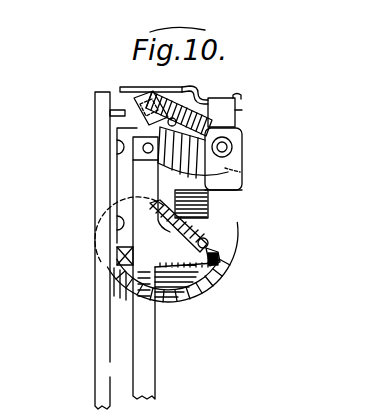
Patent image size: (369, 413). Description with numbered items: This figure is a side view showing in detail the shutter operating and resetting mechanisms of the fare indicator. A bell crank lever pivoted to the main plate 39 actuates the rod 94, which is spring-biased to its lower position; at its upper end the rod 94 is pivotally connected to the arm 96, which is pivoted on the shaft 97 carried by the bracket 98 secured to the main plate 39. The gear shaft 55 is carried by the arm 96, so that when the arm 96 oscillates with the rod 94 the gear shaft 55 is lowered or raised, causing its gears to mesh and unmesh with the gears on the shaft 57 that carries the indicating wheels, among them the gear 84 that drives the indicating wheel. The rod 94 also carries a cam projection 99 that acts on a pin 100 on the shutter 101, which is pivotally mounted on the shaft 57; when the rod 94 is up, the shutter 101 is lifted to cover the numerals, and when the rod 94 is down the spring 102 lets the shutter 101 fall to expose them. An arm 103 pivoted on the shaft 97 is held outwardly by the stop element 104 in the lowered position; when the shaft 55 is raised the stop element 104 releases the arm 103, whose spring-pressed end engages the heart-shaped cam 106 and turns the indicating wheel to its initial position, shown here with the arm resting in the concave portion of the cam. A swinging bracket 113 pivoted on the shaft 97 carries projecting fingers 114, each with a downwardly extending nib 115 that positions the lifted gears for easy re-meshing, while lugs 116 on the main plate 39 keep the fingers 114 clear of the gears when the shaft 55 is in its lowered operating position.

The main plate 39 is at (98, 147).
The gear shaft 55 is at (173, 121).
The shaft 57 is at (140, 238).
The gear 84 is at (202, 292).
The rod 94 is at (145, 365).
The arm 96 is at (241, 123).
The shaft 97 is at (243, 143).
The bracket 98 is at (242, 187).
The cam projection 99 is at (218, 275).
The pin 100 is at (209, 243).
The shutter 101 is at (222, 256).
The spring 102 is at (176, 296).
The arm 103 is at (208, 202).
The stop element 104 is at (243, 172).
The heart-shaped cam 106 is at (213, 222).
The swinging bracket 113 is at (241, 99).
The projecting fingers 114 is at (147, 88).
The nib 115 is at (194, 89).
The lugs 116 is at (110, 112).